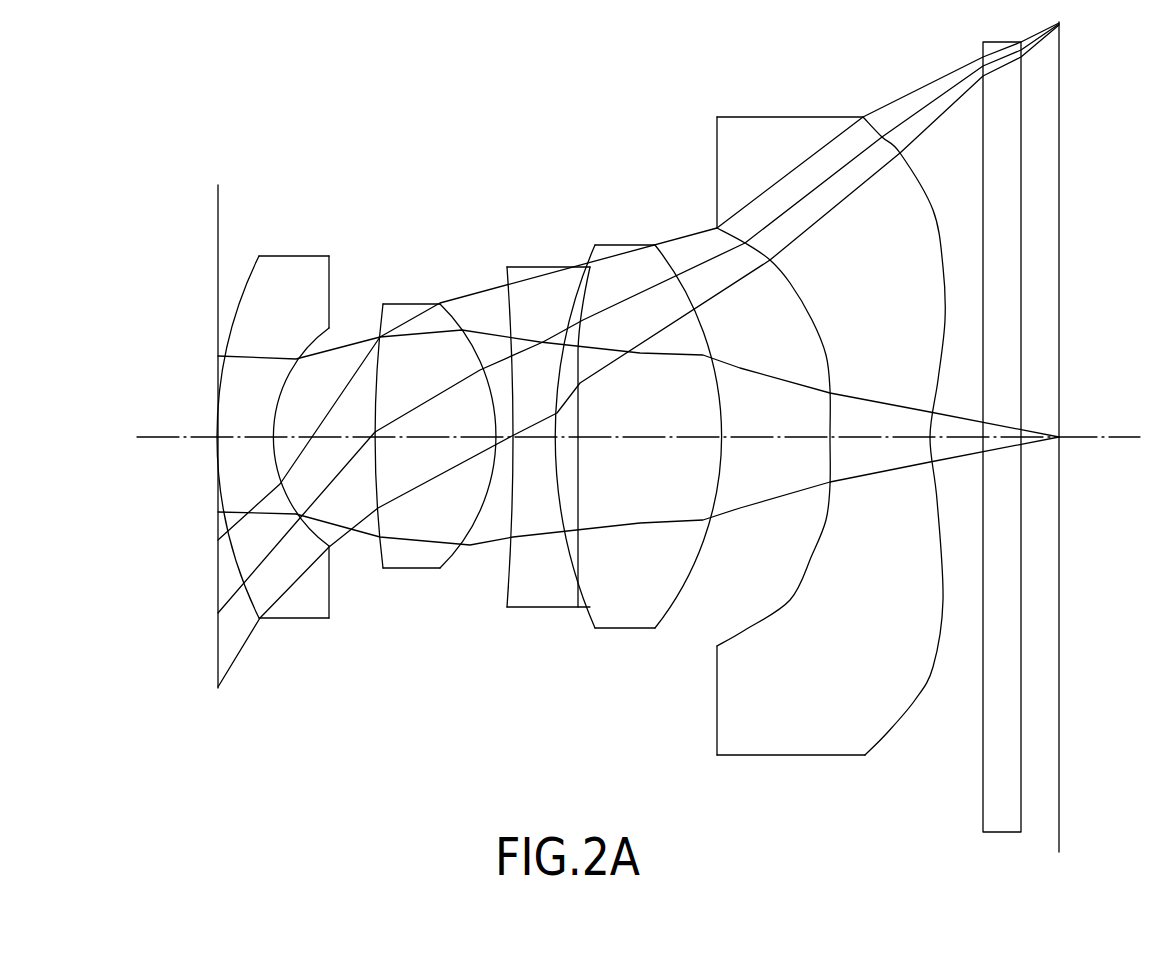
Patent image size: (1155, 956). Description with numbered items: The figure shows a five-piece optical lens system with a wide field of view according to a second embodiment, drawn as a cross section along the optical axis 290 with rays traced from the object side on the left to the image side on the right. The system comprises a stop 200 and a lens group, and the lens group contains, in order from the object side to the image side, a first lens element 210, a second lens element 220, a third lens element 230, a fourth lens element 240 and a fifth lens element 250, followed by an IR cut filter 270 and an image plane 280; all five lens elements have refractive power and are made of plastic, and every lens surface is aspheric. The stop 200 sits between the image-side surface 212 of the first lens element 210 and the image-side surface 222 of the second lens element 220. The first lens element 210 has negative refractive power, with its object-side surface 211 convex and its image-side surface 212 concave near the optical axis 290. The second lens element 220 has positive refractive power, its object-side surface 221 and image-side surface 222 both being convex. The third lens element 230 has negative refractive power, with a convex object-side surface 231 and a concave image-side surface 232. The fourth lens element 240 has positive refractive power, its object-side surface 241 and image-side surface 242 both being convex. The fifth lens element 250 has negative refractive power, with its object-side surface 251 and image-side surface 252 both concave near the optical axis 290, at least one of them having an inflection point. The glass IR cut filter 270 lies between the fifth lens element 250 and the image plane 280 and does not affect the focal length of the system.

The stop 200 is at (382, 337).
The first lens element 210 is at (273, 446).
The object-side surface of the first lens element 211 is at (226, 540).
The image-side surface of the first lens element 212 is at (312, 548).
The second lens element 220 is at (422, 426).
The object-side surface of the second lens element 221 is at (378, 500).
The image-side surface of the second lens element 222 is at (478, 532).
The third lens element 230 is at (528, 426).
The object-side surface of the third lens element 231 is at (510, 548).
The image-side surface of the third lens element 232 is at (578, 550).
The fourth lens element 240 is at (644, 423).
The object-side surface of the fourth lens element 241 is at (595, 550).
The image-side surface of the fourth lens element 242 is at (698, 543).
The fifth lens element 250 is at (836, 426).
The object-side surface of the fifth lens element 251 is at (790, 600).
The image-side surface of the fifth lens element 252 is at (915, 700).
The IR cut filter 270 is at (983, 223).
The image plane 280 is at (1060, 155).
The optical axis 290 is at (170, 437).